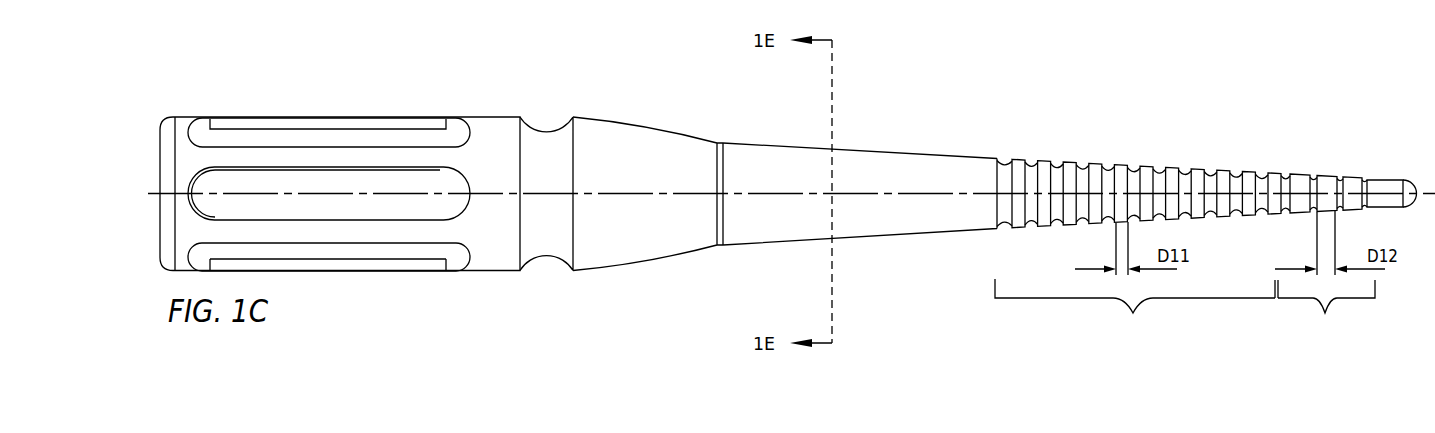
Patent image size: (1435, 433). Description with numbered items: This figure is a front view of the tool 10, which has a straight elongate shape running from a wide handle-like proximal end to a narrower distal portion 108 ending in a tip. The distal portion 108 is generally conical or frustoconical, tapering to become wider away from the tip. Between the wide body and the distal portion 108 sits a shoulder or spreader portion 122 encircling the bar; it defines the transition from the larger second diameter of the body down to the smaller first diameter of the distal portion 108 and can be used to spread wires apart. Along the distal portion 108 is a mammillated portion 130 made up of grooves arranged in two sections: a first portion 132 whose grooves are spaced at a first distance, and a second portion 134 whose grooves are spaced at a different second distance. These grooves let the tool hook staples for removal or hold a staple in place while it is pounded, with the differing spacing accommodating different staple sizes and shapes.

The tool 10 is at (772, 216).
The spreader portion 122 is at (628, 123).
The distal portion 108 is at (1194, 216).
The mammillated portion 130 is at (1088, 157).
The first portion 132 is at (1126, 247).
The second portion 134 is at (1325, 313).